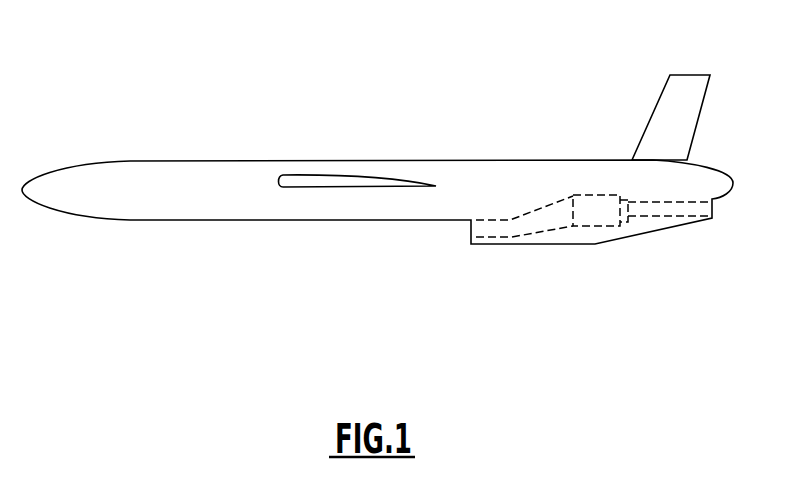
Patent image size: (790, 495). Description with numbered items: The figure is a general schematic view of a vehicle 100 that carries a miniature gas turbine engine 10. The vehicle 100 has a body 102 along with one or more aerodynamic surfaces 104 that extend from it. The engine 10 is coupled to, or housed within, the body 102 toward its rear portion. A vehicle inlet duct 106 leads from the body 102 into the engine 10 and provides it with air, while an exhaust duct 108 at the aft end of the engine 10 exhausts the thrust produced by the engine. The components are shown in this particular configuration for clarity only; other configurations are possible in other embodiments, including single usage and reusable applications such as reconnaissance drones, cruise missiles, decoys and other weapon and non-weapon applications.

The vehicle 100 is at (409, 80).
The body 102 is at (178, 161).
The aerodynamic surface 104 is at (313, 188).
The vehicle inlet duct 106 is at (512, 228).
The miniature gas turbine engine 10 is at (593, 193).
The exhaust duct 108 is at (632, 205).